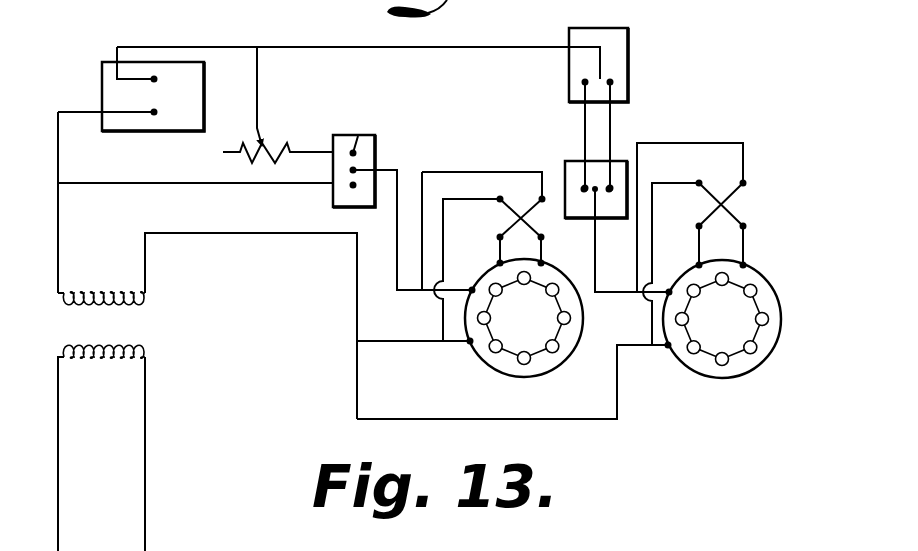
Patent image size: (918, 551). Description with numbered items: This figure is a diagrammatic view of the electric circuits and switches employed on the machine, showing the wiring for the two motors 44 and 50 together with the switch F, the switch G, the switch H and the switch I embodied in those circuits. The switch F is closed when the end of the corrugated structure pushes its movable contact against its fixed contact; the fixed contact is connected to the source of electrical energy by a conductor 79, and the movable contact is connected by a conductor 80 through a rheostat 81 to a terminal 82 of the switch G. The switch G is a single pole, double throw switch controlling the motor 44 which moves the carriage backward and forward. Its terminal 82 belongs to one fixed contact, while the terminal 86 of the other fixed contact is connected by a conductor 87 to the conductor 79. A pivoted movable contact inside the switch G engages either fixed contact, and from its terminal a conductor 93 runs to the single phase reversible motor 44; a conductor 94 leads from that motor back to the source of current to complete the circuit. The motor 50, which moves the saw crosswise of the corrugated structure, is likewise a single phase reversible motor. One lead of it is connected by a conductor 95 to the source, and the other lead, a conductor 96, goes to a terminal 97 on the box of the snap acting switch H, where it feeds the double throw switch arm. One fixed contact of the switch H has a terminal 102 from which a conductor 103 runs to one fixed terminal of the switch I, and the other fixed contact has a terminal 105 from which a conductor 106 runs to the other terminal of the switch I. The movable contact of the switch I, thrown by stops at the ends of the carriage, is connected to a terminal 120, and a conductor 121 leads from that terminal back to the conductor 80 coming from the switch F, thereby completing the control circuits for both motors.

The motor 44 is at (552, 276).
The motor 50 is at (758, 278).
The conductor 79 is at (58, 155).
The conductor 80 is at (233, 47).
The rheostat 81 is at (278, 141).
The terminal 82 is at (353, 153).
The terminal 86 is at (353, 185).
The conductor 87 is at (237, 183).
The conductor 93 is at (407, 178).
The conductor 94 is at (357, 283).
The conductor 95 is at (608, 419).
The conductor 96 is at (595, 248).
The terminal 97 is at (595, 189).
The terminal 102 is at (583, 189).
The conductor 103 is at (583, 137).
The terminal 105 is at (610, 188).
The conductor 106 is at (610, 130).
The terminal 120 is at (598, 80).
The conductor 121 is at (473, 47).
The switch F is at (175, 78).
The switch G is at (378, 140).
The switch H is at (624, 163).
The switch I is at (620, 33).